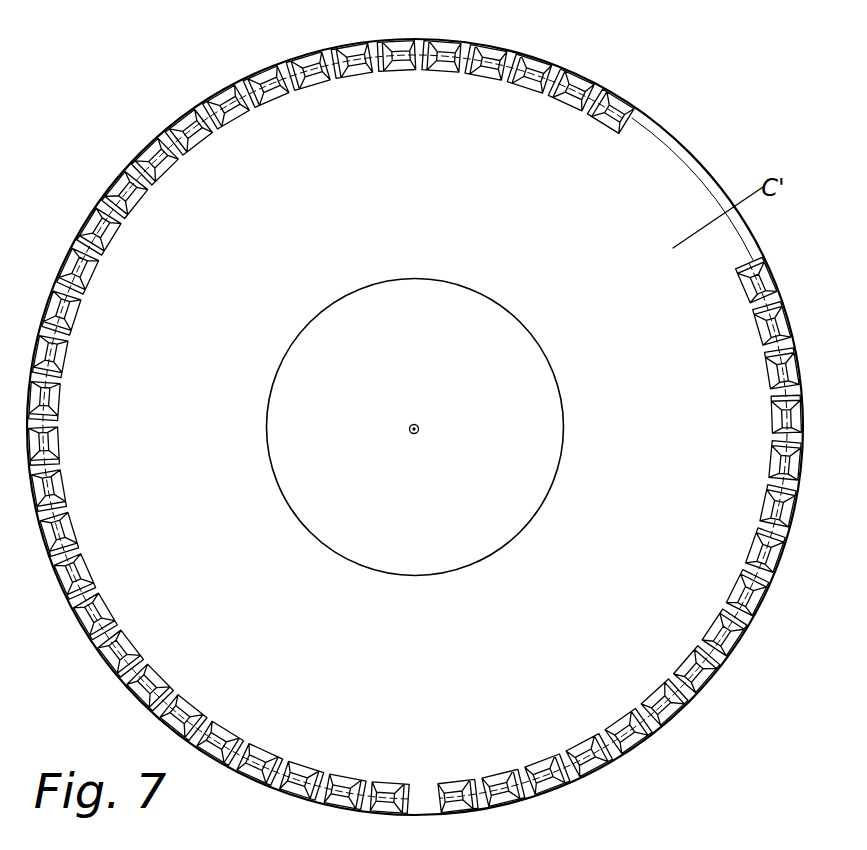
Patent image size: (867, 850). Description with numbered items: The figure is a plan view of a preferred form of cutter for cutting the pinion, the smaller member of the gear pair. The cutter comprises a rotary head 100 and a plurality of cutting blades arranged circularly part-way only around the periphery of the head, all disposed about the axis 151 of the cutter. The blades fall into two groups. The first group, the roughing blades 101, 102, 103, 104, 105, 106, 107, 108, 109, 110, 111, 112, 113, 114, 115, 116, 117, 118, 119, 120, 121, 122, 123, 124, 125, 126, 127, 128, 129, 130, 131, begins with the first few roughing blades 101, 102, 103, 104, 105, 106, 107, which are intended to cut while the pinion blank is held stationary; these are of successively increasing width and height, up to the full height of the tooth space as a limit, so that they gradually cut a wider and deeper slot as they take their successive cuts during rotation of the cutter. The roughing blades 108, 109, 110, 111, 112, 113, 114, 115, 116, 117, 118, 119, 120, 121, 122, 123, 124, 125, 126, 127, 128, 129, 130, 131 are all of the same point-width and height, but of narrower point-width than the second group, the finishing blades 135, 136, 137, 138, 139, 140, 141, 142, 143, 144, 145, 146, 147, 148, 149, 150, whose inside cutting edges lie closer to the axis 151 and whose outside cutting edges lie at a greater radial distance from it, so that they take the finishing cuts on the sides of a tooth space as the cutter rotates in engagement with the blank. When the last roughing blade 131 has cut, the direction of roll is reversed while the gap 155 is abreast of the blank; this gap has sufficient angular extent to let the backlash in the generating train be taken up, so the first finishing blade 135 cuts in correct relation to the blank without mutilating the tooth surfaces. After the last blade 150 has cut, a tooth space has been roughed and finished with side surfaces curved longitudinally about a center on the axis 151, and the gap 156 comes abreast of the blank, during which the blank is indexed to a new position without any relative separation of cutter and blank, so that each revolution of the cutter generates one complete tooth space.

The rotary head 100 is at (415, 427).
The roughing blade 101 is at (606, 122).
The roughing blade 102 is at (567, 101).
The roughing blade 103 is at (526, 84).
The roughing blade 104 is at (484, 74).
The roughing blade 105 is at (441, 65).
The roughing blade 106 is at (397, 65).
The roughing blade 107 is at (355, 69).
The roughing blade 108 is at (314, 79).
The roughing blade 109 is at (274, 95).
The roughing blade 110 is at (236, 114).
The roughing blade 111 is at (200, 137).
The roughing blade 112 is at (167, 162).
The roughing blade 113 is at (138, 196).
The roughing blade 114 is at (113, 233).
The roughing blade 115 is at (92, 272).
The roughing blade 116 is at (76, 314).
The roughing blade 117 is at (65, 357).
The roughing blade 118 is at (60, 400).
The roughing blade 119 is at (59, 444).
The roughing blade 120 is at (64, 488).
The roughing blade 121 is at (74, 529).
The roughing blade 122 is at (89, 569).
The roughing blade 123 is at (109, 607).
The roughing blade 124 is at (133, 642).
The roughing blade 125 is at (162, 676).
The roughing blade 126 is at (194, 705).
The roughing blade 127 is at (229, 729).
The roughing blade 128 is at (266, 750).
The roughing blade 129 is at (307, 770).
The roughing blade 130 is at (349, 786).
The last roughing blade 131 is at (392, 790).
The first finishing blade 135 is at (457, 787).
The finishing blade 136 is at (500, 779).
The finishing blade 137 is at (543, 765).
The finishing blade 138 is at (583, 746).
The finishing blade 139 is at (621, 723).
The finishing blade 140 is at (655, 694).
The finishing blade 141 is at (685, 662).
The finishing blade 142 is at (713, 627).
The finishing blade 143 is at (735, 589).
The finishing blade 144 is at (753, 548).
The finishing blade 145 is at (765, 504).
The finishing blade 146 is at (772, 459).
The finishing blade 147 is at (773, 416).
The finishing blade 148 is at (769, 372).
The finishing blade 149 is at (759, 327).
The last finishing blade 150 is at (744, 287).
The axis of the cutter 151 is at (420, 429).
The gap 155 is at (417, 812).
The gap 156 is at (700, 176).